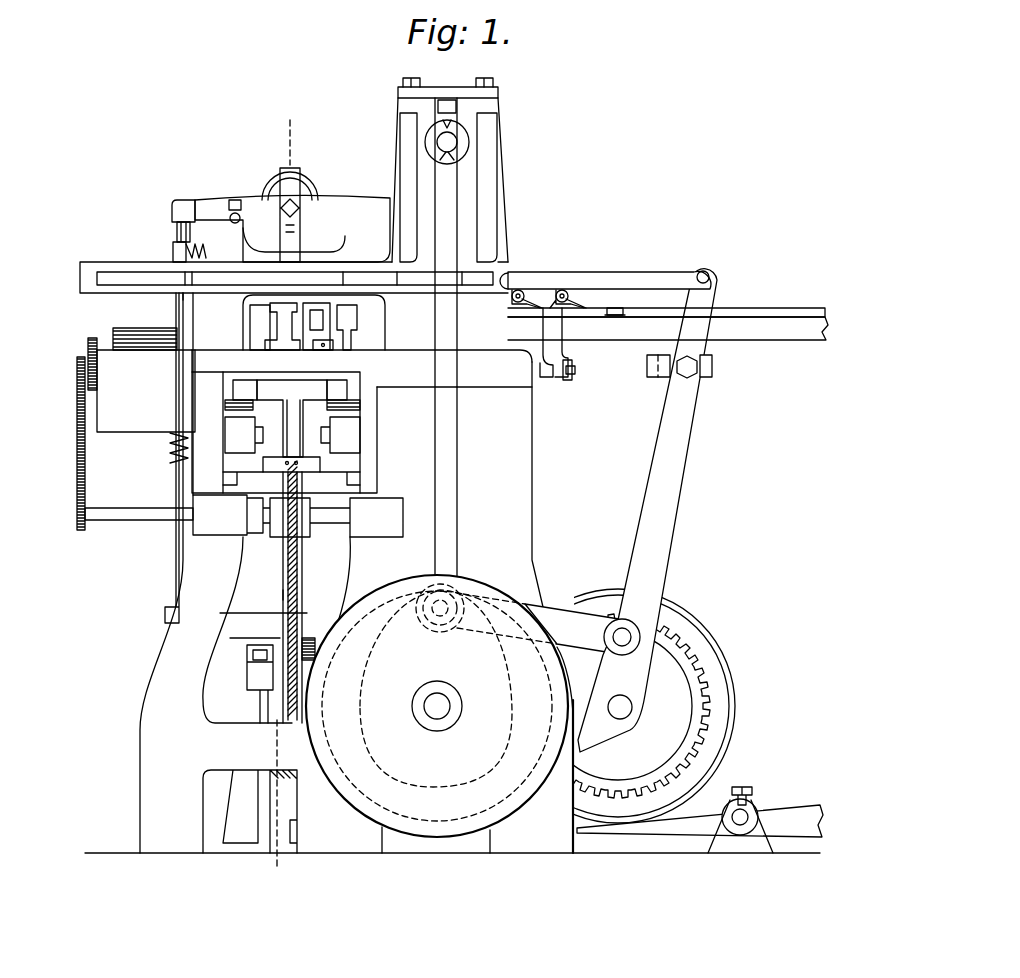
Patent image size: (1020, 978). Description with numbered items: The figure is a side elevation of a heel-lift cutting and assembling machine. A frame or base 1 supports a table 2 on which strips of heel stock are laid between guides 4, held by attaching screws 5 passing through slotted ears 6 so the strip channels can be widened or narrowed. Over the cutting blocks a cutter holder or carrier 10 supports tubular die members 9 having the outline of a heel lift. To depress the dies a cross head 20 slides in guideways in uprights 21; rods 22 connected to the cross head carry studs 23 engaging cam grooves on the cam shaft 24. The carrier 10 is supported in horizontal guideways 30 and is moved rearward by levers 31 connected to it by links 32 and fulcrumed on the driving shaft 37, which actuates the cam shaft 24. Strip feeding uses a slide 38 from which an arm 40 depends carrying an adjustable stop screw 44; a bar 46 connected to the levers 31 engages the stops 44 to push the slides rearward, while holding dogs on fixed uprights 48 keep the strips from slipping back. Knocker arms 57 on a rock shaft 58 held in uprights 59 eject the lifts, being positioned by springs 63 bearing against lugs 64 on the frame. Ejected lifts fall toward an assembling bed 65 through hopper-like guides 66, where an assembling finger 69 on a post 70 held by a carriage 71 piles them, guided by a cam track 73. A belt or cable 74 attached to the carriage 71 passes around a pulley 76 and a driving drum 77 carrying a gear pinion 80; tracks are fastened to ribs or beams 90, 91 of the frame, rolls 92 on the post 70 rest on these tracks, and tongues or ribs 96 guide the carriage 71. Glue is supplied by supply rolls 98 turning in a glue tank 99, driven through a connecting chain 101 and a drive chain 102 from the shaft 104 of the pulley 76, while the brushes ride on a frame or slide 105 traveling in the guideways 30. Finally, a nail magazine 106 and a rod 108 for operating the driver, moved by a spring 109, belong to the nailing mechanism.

The frame 1 is at (522, 480).
The table 2 is at (798, 337).
The guides 4 is at (780, 308).
The attaching screws 5 is at (613, 305).
The slotted ears 6 is at (622, 313).
The tubular die members 9 is at (287, 505).
The cutter holder or carrier 10 is at (468, 282).
The cross head 20 is at (448, 112).
The uprights 21 is at (487, 172).
The rods 22 is at (455, 425).
The studs 23 is at (447, 595).
The cam shaft 24 is at (440, 708).
The horizontal guideways 30 is at (110, 272).
The levers 31 is at (673, 485).
The links 32 is at (668, 270).
The driving shaft 37 is at (622, 707).
The slide 38 is at (525, 288).
The arm 40 is at (545, 377).
The adjustable stop screw 44 is at (575, 368).
The bar 46 is at (650, 377).
The fixed uprights 48 is at (570, 293).
The knocker arms 57 is at (290, 248).
The rock shaft 58 is at (237, 223).
The uprights 59 is at (225, 228).
The springs 63 is at (198, 232).
The lugs 64 is at (173, 248).
The assembling bed 65 is at (292, 401).
The guides 66 is at (314, 322).
The assembling finger 69 is at (323, 347).
The post 70 is at (292, 418).
The carriage 71 is at (255, 477).
The cam track 73 is at (350, 405).
The belt or cable 74 is at (300, 557).
The pulley 76 is at (287, 543).
The driving drum 77 is at (282, 595).
The gear pinion 80 is at (310, 638).
The rib or beam 90 is at (197, 412).
The rib or beam 91 is at (372, 437).
The rolls 92 is at (343, 387).
The tongues or ribs 96 is at (357, 483).
The supply rolls 98 is at (145, 328).
The glue tank 99 is at (128, 428).
The connecting chain 101 is at (93, 336).
The drive chain 102 is at (86, 490).
The shaft 104 is at (103, 517).
The frame or slide 105 is at (226, 280).
The nail magazine 106 is at (320, 183).
The rod 108 is at (173, 543).
The spring 109 is at (168, 452).